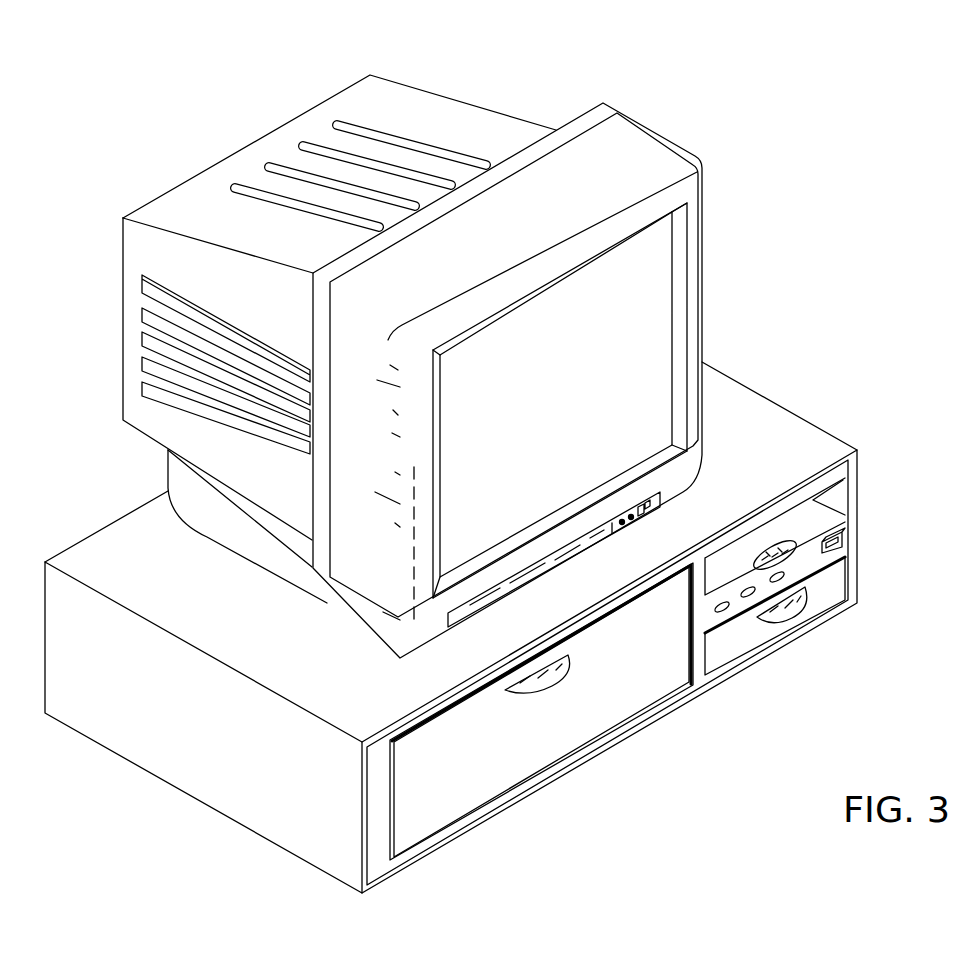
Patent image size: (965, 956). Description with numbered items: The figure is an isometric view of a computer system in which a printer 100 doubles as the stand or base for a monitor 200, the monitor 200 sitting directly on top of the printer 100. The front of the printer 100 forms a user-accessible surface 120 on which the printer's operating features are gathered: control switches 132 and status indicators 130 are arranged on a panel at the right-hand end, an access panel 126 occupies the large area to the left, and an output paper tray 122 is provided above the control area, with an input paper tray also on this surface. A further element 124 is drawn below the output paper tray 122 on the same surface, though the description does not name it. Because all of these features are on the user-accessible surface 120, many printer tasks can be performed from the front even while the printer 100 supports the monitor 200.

The monitor 200 is at (642, 298).
The printer 100 is at (725, 403).
The user-accessible surface 120 is at (377, 863).
The output paper tray 122 is at (817, 517).
The lower cover door 124 is at (818, 602).
The access panel 126 is at (588, 728).
The status indicators 130 is at (723, 608).
The control switches 132 is at (843, 544).